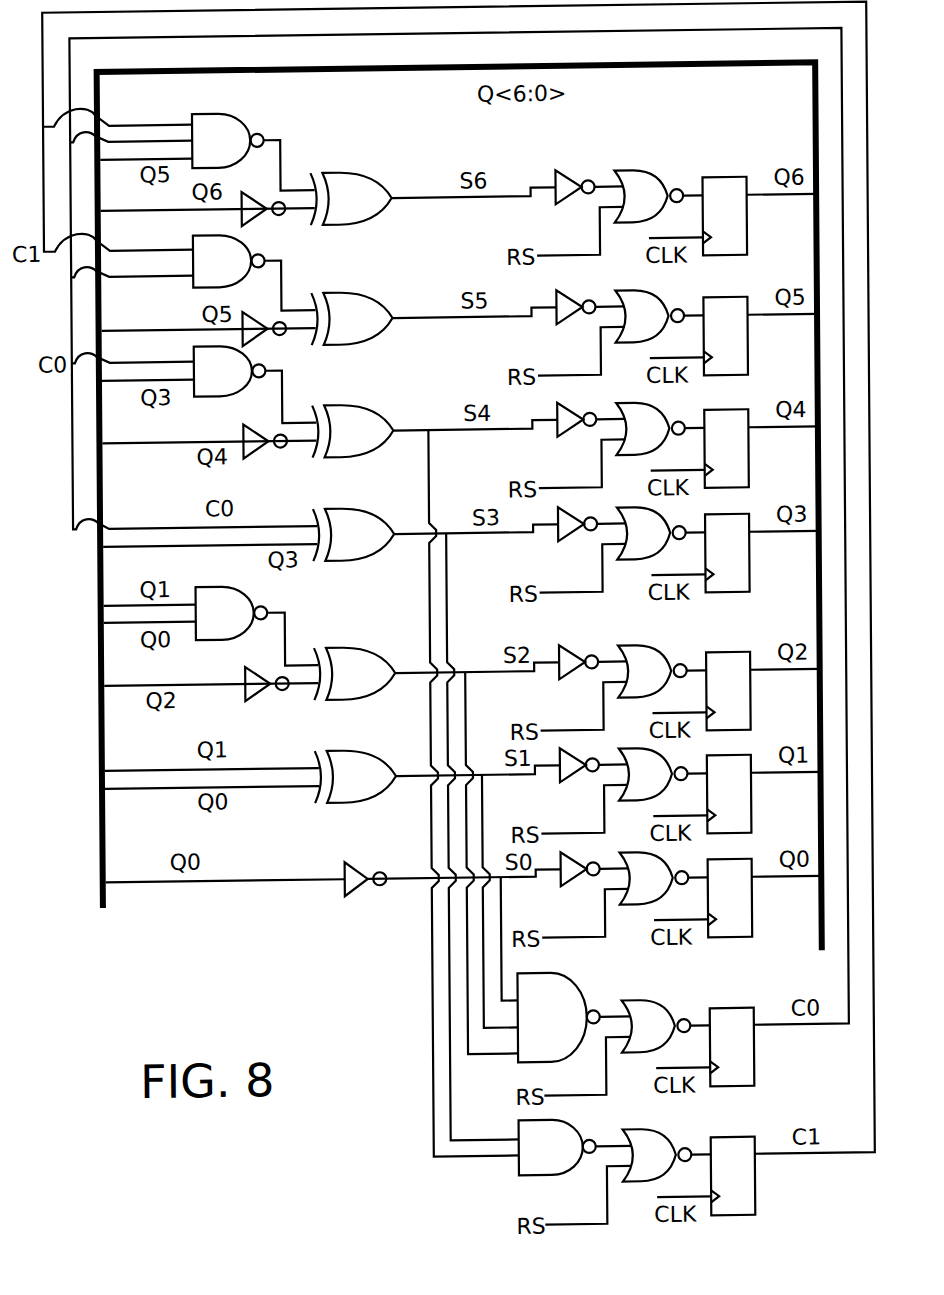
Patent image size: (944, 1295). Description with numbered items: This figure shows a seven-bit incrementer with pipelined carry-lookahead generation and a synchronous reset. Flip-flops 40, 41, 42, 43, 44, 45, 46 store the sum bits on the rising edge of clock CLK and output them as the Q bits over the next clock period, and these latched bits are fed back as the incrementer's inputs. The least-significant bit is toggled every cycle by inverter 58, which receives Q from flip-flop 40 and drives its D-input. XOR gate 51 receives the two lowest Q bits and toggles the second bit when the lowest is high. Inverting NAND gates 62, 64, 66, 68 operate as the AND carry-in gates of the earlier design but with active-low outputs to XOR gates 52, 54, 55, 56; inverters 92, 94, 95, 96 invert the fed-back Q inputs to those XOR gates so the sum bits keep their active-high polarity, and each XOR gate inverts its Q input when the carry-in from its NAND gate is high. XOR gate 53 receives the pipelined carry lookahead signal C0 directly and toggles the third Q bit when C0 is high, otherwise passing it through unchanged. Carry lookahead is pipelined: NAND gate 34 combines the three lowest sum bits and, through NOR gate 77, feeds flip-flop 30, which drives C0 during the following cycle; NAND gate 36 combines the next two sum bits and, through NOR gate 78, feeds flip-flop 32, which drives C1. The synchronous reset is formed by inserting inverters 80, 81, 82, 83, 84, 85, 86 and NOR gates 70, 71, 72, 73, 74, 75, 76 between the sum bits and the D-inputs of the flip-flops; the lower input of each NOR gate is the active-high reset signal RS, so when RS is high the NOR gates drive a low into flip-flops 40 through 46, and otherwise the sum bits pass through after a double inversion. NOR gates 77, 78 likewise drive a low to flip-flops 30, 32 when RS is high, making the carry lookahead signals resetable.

The NAND gate 68 is at (207, 150).
The NAND gate 66 is at (207, 270).
The NAND gate 64 is at (207, 380).
The NAND gate 62 is at (207, 622).
The XOR gate 56 is at (344, 207).
The XOR gate 55 is at (344, 327).
The XOR gate 54 is at (344, 440).
The XOR gate 53 is at (344, 543).
The XOR gate 52 is at (344, 682).
The XOR gate 51 is at (344, 785).
The inverter 96 is at (271, 212).
The inverter 95 is at (271, 332).
The inverter 94 is at (271, 444).
The inverter 92 is at (271, 687).
The inverter 58 is at (369, 892).
The inverter 86 is at (580, 196).
The inverter 85 is at (580, 316).
The inverter 84 is at (580, 428).
The inverter 83 is at (580, 533).
The inverter 82 is at (580, 671).
The inverter 81 is at (580, 774).
The inverter 80 is at (580, 878).
The NOR gate 76 is at (633, 210).
The NOR gate 75 is at (633, 330).
The NOR gate 74 is at (633, 442).
The NOR gate 73 is at (633, 546).
The NOR gate 72 is at (633, 684).
The NOR gate 71 is at (633, 788).
The NOR gate 70 is at (633, 892).
The NOR gate 77 is at (634, 1040).
The NOR gate 78 is at (634, 1168).
The flip-flop 46 is at (717, 220).
The flip-flop 45 is at (717, 340).
The flip-flop 44 is at (717, 452).
The flip-flop 43 is at (717, 556).
The flip-flop 42 is at (717, 694).
The flip-flop 41 is at (717, 798).
The flip-flop 40 is at (717, 902).
The flip-flop 30 is at (718, 1050).
The flip-flop 32 is at (718, 1178).
The NAND gate 34 is at (533, 1035).
The NAND gate 36 is at (533, 1163).